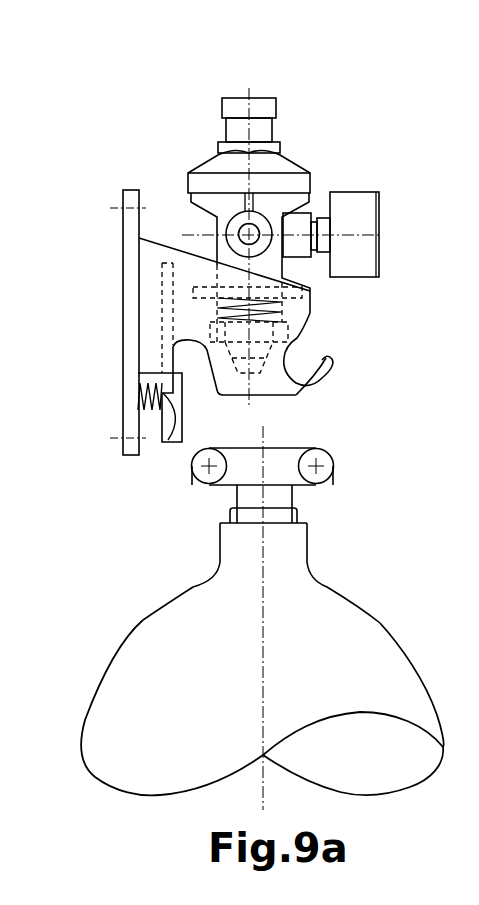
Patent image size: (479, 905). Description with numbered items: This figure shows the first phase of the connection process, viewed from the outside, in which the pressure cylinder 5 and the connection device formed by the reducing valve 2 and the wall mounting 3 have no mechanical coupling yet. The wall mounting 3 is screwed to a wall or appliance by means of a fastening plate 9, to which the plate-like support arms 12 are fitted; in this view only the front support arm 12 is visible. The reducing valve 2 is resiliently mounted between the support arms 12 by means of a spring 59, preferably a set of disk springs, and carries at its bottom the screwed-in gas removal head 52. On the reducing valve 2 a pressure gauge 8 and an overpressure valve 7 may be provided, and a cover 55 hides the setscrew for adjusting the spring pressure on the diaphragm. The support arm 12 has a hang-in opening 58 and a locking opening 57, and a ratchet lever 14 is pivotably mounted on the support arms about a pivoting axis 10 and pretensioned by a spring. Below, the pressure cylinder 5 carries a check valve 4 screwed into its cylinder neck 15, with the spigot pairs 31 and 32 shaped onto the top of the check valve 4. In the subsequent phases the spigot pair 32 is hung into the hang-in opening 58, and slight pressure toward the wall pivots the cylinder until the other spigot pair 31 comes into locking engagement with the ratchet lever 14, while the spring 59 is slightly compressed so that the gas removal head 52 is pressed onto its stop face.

The reducing valve 2 is at (307, 108).
The wall mounting 3 is at (103, 166).
The check valve 4 is at (278, 493).
The pressure cylinder 5 is at (360, 673).
The overpressure valve 7 is at (262, 227).
The pressure gauge 8 is at (355, 210).
The fastening plate 9 is at (133, 200).
The pivoting axis 10 is at (162, 263).
The support arm 12 is at (335, 367).
The ratchet lever 14 is at (176, 437).
The cylinder neck 15 is at (293, 547).
The spigot pair 31 is at (203, 473).
The spigot pair 32 is at (327, 460).
The gas removal head 52 is at (287, 333).
The cover 55 is at (262, 108).
The locking opening 57 is at (192, 354).
The hang-in opening 58 is at (295, 358).
The spring 59 is at (287, 307).